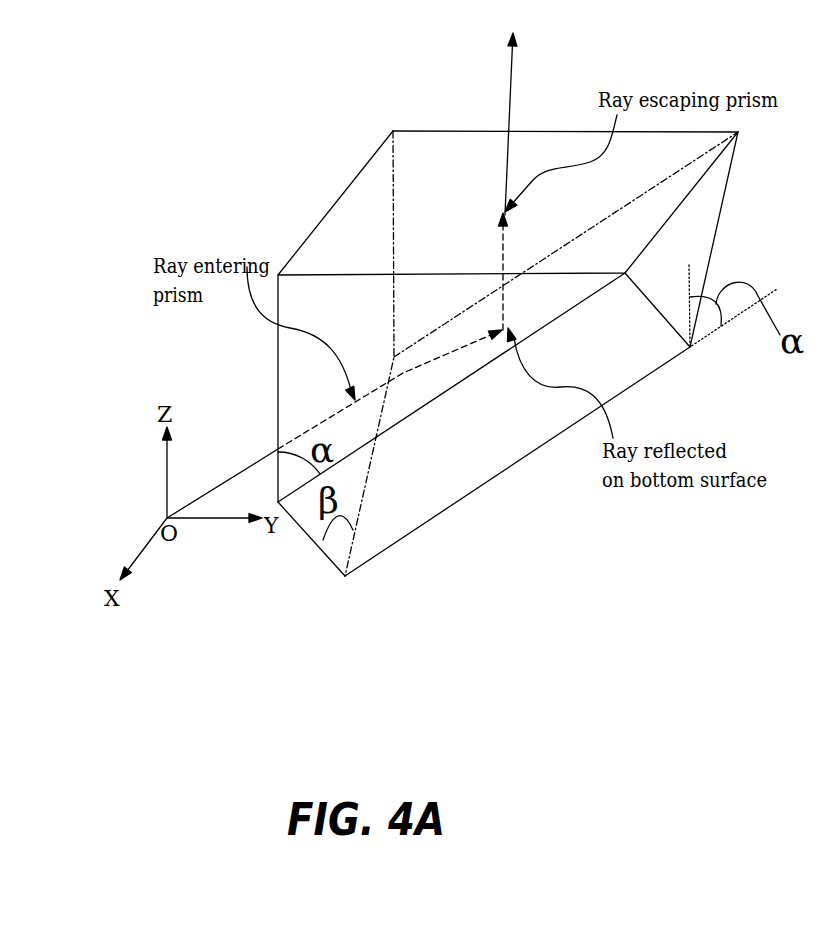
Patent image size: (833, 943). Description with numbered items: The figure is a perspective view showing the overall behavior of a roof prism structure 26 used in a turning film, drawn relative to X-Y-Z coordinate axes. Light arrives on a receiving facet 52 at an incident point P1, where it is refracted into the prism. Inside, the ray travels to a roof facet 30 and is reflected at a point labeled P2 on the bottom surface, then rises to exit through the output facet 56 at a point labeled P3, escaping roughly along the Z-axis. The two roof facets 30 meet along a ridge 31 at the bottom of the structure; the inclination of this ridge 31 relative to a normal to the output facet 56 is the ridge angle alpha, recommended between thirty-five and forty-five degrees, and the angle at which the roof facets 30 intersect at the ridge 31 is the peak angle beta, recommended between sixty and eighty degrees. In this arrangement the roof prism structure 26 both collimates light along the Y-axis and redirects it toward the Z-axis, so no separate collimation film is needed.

The receiving facet 52 is at (325, 212).
The output facet 56 is at (437, 175).
The roof prism structure 26 is at (697, 213).
The roof facet 30 is at (487, 435).
The ridge 31 is at (650, 374).
The incident point P1 is at (234, 358).
The bottom surface point P2 is at (517, 461).
The exit surface point P3 is at (733, 236).